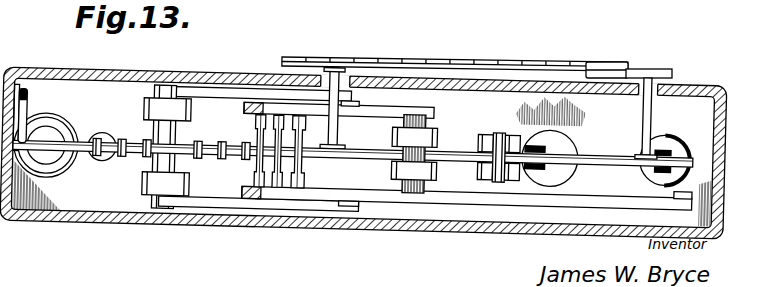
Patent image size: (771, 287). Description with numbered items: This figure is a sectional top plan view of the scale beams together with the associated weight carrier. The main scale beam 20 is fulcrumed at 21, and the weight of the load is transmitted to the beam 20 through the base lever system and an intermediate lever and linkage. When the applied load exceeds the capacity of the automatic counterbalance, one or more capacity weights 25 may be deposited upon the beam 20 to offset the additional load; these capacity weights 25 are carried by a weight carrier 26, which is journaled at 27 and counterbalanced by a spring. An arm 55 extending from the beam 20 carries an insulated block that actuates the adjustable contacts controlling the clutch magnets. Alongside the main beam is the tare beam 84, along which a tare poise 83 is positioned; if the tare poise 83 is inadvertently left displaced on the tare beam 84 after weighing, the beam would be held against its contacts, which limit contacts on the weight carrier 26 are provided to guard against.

The beam 20 is at (80, 148).
The fulcrum 21 is at (498, 182).
The capacity weights 25 is at (260, 190).
The weight carrier 26 is at (378, 200).
The journal 27 is at (414, 200).
The arm 55 is at (33, 97).
The tare poise 83 is at (598, 70).
The tare beam 84 is at (652, 69).